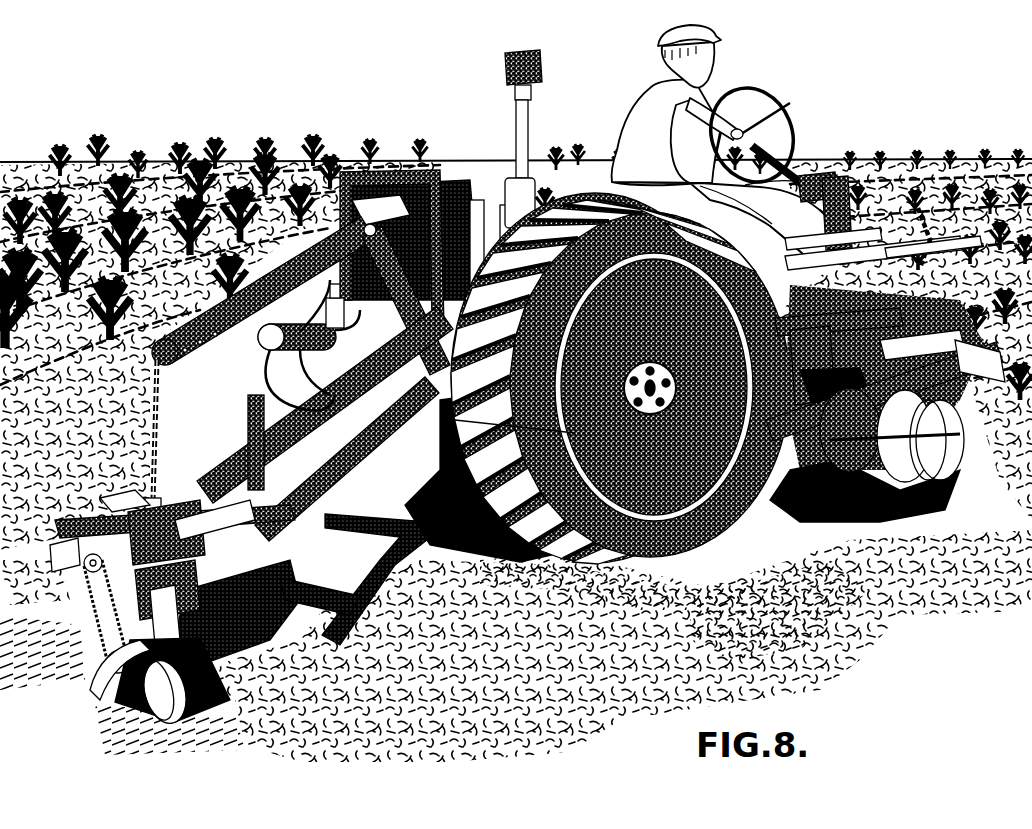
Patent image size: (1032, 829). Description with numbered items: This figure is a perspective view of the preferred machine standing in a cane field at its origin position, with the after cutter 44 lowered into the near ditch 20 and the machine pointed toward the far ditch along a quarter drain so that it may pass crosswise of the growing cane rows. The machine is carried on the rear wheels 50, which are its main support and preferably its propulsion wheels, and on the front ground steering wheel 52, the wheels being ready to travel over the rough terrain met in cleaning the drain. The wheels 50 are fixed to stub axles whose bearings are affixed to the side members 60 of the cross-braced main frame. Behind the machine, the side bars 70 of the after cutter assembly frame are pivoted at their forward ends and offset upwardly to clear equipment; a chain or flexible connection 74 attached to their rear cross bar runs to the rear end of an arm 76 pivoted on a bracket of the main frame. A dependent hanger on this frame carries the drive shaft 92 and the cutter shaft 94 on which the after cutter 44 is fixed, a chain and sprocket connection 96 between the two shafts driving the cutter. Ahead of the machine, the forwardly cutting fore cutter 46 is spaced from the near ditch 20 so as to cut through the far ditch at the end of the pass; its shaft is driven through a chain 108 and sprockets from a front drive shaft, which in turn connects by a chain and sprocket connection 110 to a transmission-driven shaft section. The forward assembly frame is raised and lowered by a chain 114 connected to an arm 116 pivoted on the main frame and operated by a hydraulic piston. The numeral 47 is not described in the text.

The near ditch 20 is at (170, 728).
The after cutter 44 is at (140, 700).
The fore cutter 46 is at (938, 466).
The disc 47 is at (900, 482).
The rear wheels 50 is at (472, 178).
The front ground steering wheel 52 is at (838, 505).
The side members of main frame 60 is at (528, 432).
The side bars of after cutter assembly frame 70 is at (252, 420).
The chain or flexible connection 74 is at (150, 443).
The arm 76 is at (268, 287).
The drive shaft 92 is at (88, 570).
The cutter shaft 94 is at (110, 672).
The chain and sprocket connection 96 is at (95, 618).
The chain 108 is at (968, 433).
The chain and sprocket connection 110 is at (792, 350).
The chain 114 is at (930, 262).
The arm 116 is at (913, 232).